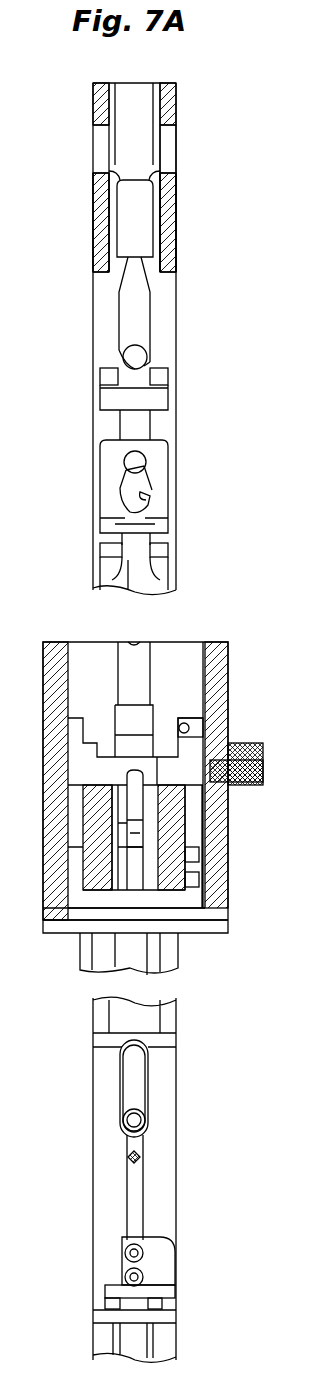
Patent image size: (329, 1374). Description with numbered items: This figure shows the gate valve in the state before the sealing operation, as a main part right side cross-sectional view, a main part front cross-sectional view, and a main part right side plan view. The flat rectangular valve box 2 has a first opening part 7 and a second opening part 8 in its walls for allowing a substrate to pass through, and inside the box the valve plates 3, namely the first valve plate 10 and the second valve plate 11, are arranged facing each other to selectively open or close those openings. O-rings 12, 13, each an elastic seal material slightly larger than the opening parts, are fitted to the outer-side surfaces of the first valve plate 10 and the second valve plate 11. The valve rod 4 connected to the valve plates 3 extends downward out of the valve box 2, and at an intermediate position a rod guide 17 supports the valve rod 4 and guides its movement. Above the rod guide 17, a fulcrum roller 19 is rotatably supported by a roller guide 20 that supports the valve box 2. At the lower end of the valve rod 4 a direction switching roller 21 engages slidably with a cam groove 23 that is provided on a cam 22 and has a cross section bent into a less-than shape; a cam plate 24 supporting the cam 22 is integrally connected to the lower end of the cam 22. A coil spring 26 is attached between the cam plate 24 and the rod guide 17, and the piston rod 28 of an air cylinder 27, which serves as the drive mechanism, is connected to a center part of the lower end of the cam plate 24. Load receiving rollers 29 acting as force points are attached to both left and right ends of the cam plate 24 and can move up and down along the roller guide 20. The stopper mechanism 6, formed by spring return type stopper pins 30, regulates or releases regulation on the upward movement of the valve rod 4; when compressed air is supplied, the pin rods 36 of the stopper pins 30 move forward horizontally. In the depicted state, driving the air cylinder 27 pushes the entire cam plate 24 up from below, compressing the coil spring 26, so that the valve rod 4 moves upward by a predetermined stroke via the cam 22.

The valve box 2 is at (178, 93).
The valve plates 3 is at (140, 168).
The valve rod 4 is at (116, 308).
The stopper mechanism 6 is at (278, 746).
The first opening part 7 is at (177, 131).
The second opening part 8 is at (95, 128).
The first valve plate 10 is at (161, 170).
The second valve plate 11 is at (108, 170).
The O-ring 12 is at (168, 250).
The O-ring 13 is at (100, 243).
The rod guide 17 is at (168, 406).
The fulcrum roller 19 is at (122, 362).
The roller guide 20 is at (229, 661).
The direction switching roller 21 is at (110, 486).
The cam 22 is at (158, 459).
The cam groove 23 is at (152, 503).
The cam plate 24 is at (207, 912).
The coil spring 26 is at (199, 850).
The air cylinder 27 is at (110, 576).
The piston rod 28 is at (168, 550).
The load receiving rollers 29 is at (205, 856).
The stopper pins 30 is at (243, 745).
The pin rod 36 is at (264, 770).